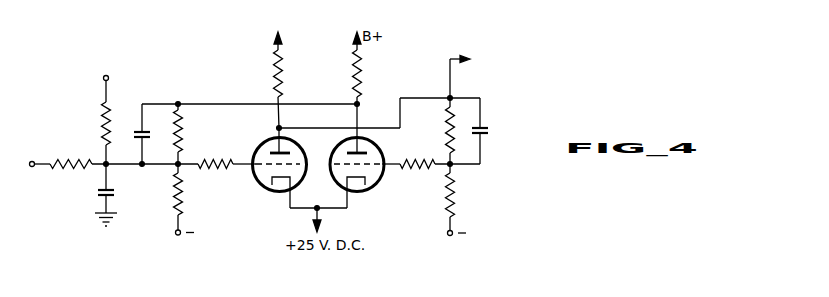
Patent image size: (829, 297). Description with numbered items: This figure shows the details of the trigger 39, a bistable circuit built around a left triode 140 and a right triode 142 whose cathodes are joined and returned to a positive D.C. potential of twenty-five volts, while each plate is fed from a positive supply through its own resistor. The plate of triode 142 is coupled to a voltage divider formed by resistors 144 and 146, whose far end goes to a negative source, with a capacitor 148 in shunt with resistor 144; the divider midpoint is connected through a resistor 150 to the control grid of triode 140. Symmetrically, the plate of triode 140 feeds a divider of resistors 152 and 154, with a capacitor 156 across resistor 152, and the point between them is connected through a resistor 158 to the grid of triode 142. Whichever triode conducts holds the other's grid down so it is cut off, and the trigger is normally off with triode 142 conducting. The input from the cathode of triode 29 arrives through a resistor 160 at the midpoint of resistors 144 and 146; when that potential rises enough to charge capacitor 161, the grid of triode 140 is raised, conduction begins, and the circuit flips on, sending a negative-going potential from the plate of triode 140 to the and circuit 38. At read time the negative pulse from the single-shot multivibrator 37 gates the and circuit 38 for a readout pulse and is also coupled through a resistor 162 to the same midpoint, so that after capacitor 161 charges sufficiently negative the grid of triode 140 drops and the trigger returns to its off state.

The triode 29 is at (53, 196).
The single-shot multivibrator 37 is at (117, 73).
The and circuit 38 is at (507, 75).
The trigger 39 is at (268, 98).
The left triode 140 is at (276, 189).
The right triode 142 is at (385, 177).
The resistor 144 is at (181, 139).
The resistor 146 is at (179, 207).
The capacitor 148 is at (138, 132).
The resistor 150 is at (234, 163).
The resistor 152 is at (448, 122).
The resistor 154 is at (455, 197).
The capacitor 156 is at (483, 130).
The resistor 158 is at (418, 162).
The resistor 160 is at (87, 163).
The capacitor 161 is at (112, 192).
The resistor 162 is at (108, 120).